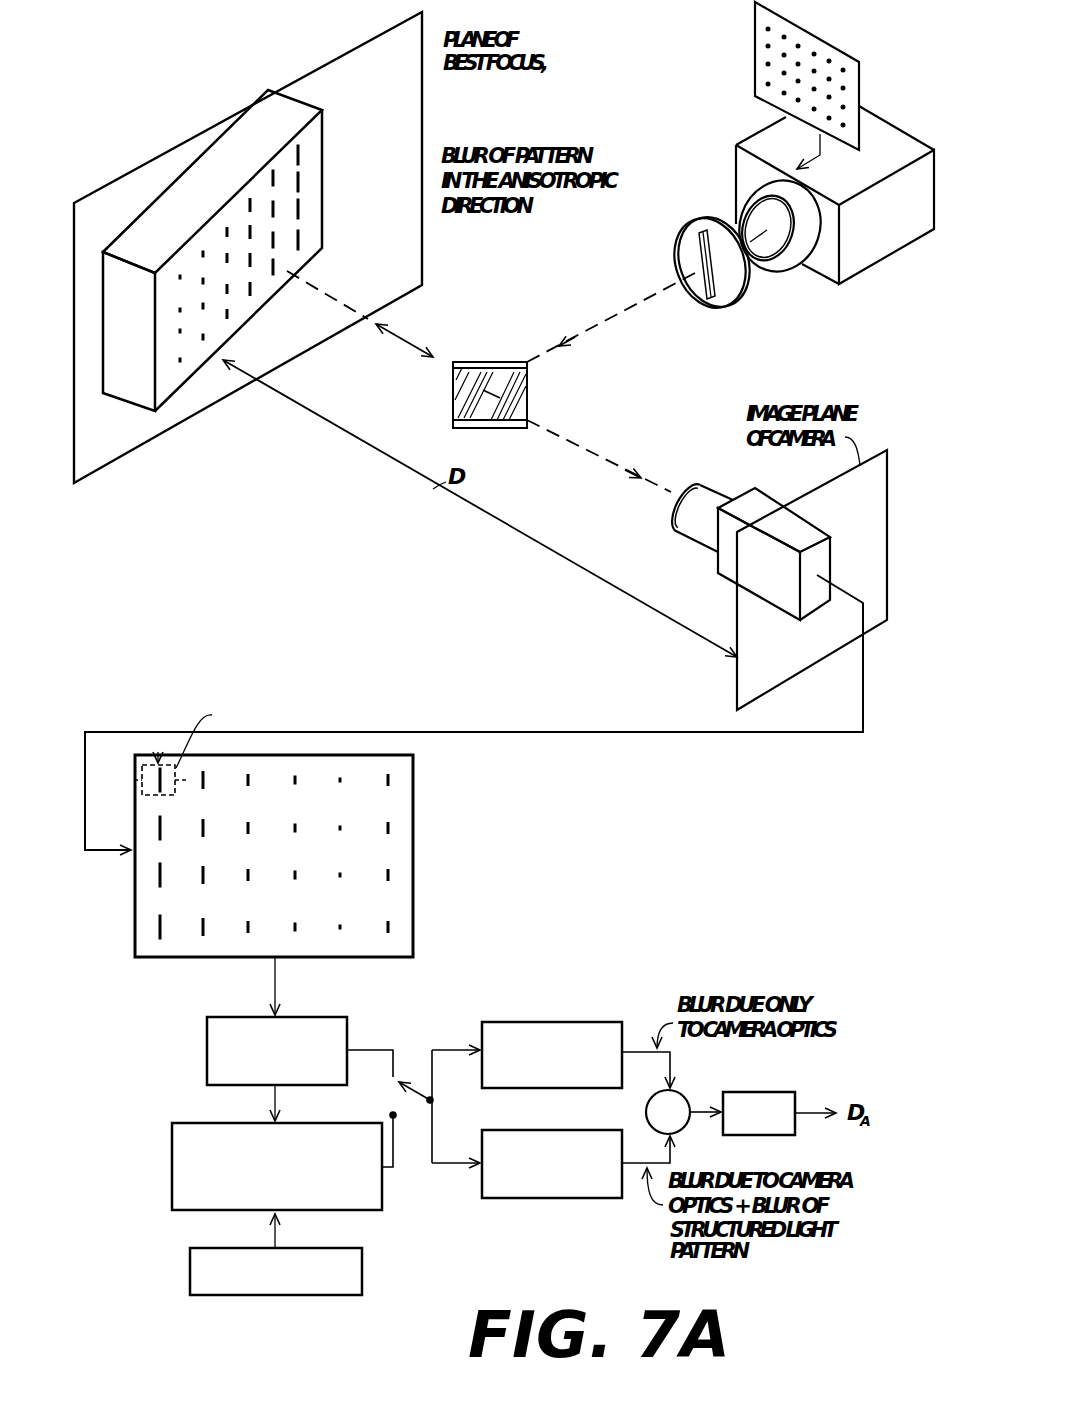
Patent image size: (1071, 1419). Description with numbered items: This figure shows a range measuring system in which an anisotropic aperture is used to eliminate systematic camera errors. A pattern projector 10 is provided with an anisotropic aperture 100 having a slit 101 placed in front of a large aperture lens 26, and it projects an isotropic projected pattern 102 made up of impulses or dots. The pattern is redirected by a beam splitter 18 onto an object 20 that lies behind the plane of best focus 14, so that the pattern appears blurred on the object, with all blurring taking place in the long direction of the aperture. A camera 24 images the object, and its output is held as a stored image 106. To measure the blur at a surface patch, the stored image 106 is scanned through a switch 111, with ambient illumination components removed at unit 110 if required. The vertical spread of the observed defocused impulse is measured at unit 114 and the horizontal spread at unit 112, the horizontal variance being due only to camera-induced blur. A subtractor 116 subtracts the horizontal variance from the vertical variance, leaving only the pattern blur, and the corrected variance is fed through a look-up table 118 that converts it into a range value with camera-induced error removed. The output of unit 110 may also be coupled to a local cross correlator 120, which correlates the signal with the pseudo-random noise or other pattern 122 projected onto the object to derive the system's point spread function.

The object 20 is at (238, 152).
The plane of best focus 14 is at (425, 99).
The isotropic projected pattern 102 is at (755, 87).
The large aperture lens 26 is at (757, 189).
The pattern projector 10 is at (872, 261).
The anisotropic aperture 100 is at (733, 297).
The slit 101 is at (681, 255).
The beam splitter 18 is at (528, 397).
The camera 24 is at (760, 497).
The stored image 106 is at (418, 772).
The ambient removal unit 110 is at (310, 1017).
The local cross correlator 120 is at (210, 1123).
The switch 111 is at (394, 1093).
The pattern 122 is at (325, 1248).
The horizontal spread measuring unit 112 is at (557, 1022).
The vertical spread measuring unit 114 is at (557, 1199).
The subtractor 116 is at (646, 1112).
The look-up table 118 is at (760, 1092).